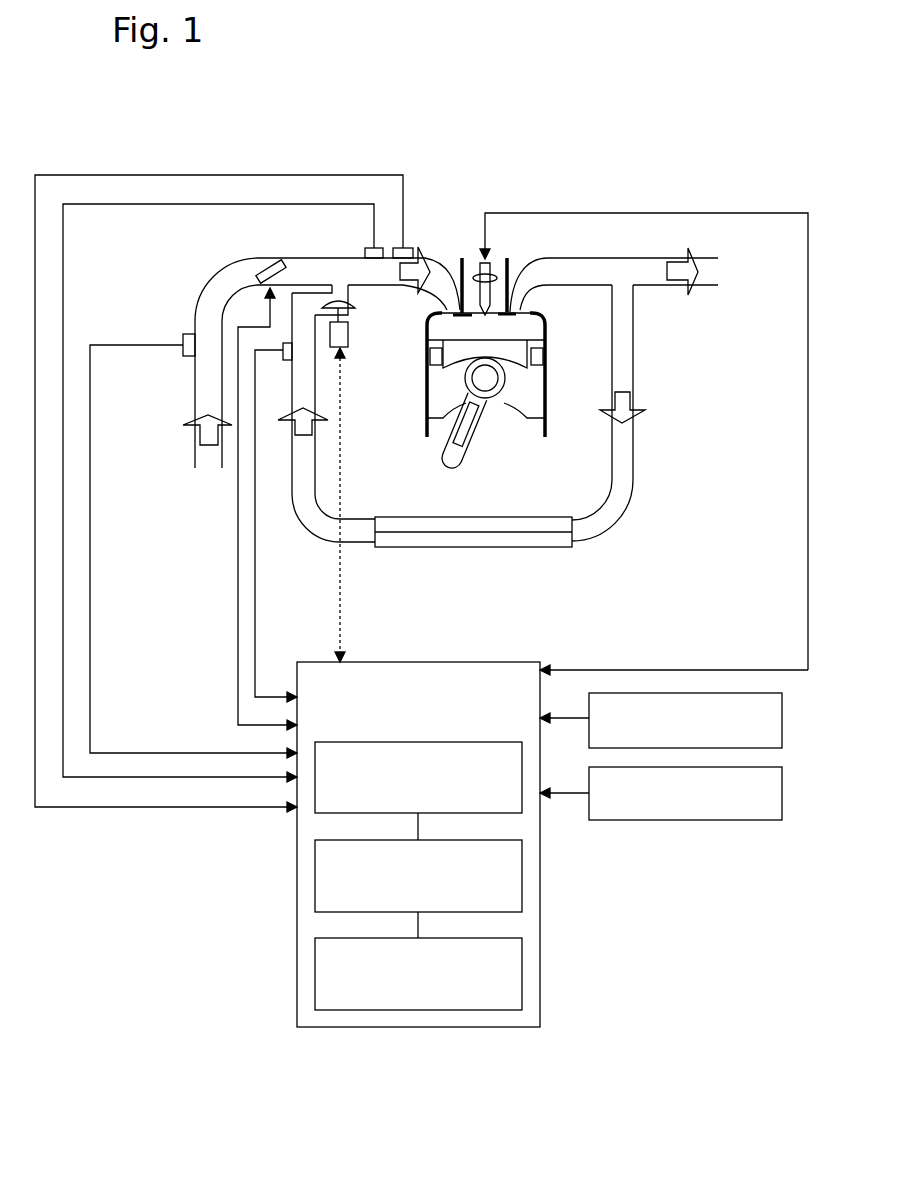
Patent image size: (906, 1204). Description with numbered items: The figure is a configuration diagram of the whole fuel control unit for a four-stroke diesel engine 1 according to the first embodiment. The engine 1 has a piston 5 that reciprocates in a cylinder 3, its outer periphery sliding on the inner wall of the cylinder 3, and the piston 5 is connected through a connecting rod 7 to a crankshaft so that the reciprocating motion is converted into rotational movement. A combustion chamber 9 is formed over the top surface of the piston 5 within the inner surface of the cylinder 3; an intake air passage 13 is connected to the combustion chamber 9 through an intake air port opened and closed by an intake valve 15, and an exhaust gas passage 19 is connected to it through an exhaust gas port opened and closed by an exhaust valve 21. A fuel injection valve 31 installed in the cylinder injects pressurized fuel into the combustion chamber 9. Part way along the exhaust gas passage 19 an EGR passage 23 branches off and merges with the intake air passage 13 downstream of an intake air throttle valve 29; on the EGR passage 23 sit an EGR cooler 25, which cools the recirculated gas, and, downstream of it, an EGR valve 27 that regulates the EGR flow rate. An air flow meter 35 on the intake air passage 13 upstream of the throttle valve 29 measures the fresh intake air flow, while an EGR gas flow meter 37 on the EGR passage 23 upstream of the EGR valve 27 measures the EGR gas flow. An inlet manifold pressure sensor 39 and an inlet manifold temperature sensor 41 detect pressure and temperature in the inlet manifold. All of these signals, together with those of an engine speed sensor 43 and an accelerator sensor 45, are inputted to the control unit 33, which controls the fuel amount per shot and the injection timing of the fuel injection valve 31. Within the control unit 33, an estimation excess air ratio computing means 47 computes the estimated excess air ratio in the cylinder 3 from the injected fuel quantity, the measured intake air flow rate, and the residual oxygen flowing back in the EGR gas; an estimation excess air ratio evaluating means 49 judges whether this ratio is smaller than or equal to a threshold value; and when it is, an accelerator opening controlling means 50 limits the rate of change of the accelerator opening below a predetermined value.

The diesel engine 1 is at (518, 119).
The cylinder 3 is at (425, 330).
The piston 5 is at (540, 386).
The connecting rod 7 is at (480, 442).
The combustion chamber 9 is at (536, 327).
The intake air passage 13 is at (234, 260).
The intake valve 15 is at (462, 257).
The exhaust gas passage 19 is at (616, 258).
The exhaust valve 21 is at (511, 258).
The EGR passage 23 is at (636, 448).
The EGR cooler 25 is at (497, 548).
The EGR valve 27 is at (350, 346).
The intake air throttle valve 29 is at (277, 262).
The fuel injection valve 31 is at (490, 268).
The control unit 33 is at (418, 844).
The air flow meter 35 is at (186, 356).
The EGR gas flow meter 37 is at (287, 361).
The inlet manifold pressure sensor 39 is at (367, 250).
The inlet manifold temperature sensor 41 is at (407, 247).
The engine speed sensor 43 is at (661, 720).
The accelerator sensor 45 is at (661, 793).
The estimation excess air ratio computing means 47 is at (418, 777).
The estimation excess air ratio evaluating means 49 is at (418, 876).
The accelerator opening controlling means 50 is at (418, 974).